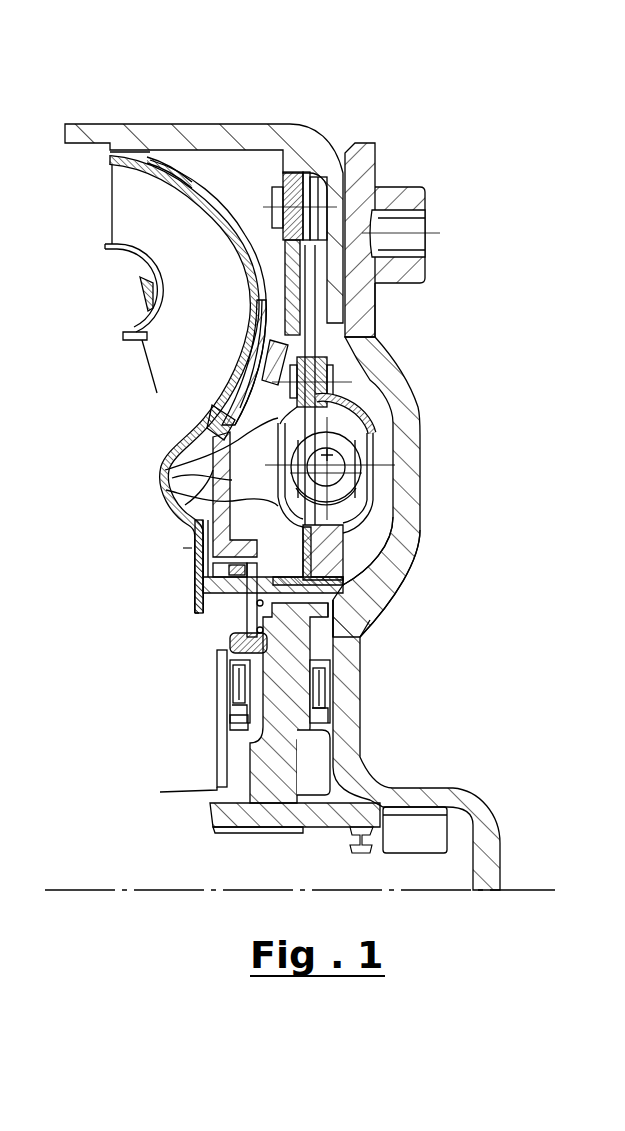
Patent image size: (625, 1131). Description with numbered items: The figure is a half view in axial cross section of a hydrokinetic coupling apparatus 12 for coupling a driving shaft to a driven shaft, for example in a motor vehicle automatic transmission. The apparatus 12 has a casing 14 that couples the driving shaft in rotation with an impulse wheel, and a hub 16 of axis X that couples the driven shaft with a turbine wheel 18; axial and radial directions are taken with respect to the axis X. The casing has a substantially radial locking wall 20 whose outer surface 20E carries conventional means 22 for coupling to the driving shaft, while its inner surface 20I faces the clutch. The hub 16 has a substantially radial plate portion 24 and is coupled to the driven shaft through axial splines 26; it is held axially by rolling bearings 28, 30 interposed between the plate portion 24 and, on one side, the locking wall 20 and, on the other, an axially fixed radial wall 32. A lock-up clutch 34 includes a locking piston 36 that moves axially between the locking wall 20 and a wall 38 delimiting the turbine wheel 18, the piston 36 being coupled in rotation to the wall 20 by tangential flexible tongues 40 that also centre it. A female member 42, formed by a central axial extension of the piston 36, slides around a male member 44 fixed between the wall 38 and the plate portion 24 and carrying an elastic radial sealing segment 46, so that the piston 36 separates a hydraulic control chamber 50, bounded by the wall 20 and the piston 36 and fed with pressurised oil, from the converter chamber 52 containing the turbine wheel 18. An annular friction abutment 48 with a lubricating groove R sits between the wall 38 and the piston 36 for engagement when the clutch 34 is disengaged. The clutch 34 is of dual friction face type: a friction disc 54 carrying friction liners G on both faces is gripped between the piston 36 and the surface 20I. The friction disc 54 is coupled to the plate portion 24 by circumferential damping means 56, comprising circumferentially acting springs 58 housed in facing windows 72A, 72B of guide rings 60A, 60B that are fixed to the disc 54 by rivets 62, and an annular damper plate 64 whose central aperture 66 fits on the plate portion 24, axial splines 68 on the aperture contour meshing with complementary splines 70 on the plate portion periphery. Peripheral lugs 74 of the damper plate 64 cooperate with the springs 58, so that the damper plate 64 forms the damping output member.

The hydrokinetic coupling apparatus 12 is at (328, 95).
The casing 14 is at (190, 118).
The hub 16 is at (203, 818).
The turbine wheel 18 is at (160, 442).
The locking wall 20 is at (420, 505).
The surface inside the casing 20I is at (247, 278).
The surface outside the casing 20E is at (392, 304).
The coupling means 22 is at (421, 175).
The plate portion 24 is at (335, 685).
The axial splines 26 is at (263, 835).
The rolling bearing 28 is at (330, 695).
The rolling bearing 30 is at (233, 695).
The radial wall 32 is at (225, 763).
The lock-up clutch 34 is at (272, 246).
The locking piston 36 is at (166, 472).
The wall 38 is at (170, 529).
The flexible tongues 40 is at (370, 168).
The female member 42 is at (306, 549).
The male member 44 is at (210, 598).
The sealing segment 46 is at (195, 611).
The friction abutment 48 is at (210, 572).
The hydraulic control chamber 50 is at (418, 577).
The hydraulic converter chamber 52 is at (166, 480).
The friction disc 54 is at (255, 358).
The circumferential damping means 56 is at (400, 392).
The circumferentially acting springs 58 is at (385, 434).
The guide ring 60A is at (173, 437).
The guide ring 60B is at (415, 544).
The rivets 62 is at (374, 400).
The damper plate 64 is at (370, 589).
The central aperture 66 is at (222, 644).
The axial splines 68 is at (340, 640).
The axial splines 70 is at (357, 625).
The window 72A is at (185, 507).
The window 72B is at (392, 460).
The peripheral lugs 74 is at (395, 492).
The friction liners G is at (247, 302).
The lubricating groove R is at (183, 549).
The axis X is at (448, 891).